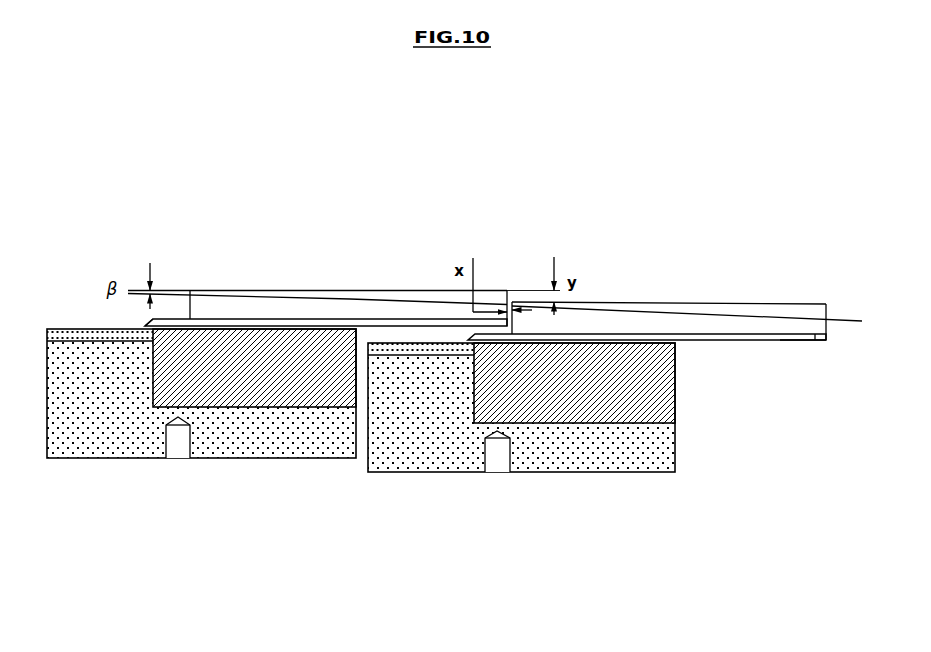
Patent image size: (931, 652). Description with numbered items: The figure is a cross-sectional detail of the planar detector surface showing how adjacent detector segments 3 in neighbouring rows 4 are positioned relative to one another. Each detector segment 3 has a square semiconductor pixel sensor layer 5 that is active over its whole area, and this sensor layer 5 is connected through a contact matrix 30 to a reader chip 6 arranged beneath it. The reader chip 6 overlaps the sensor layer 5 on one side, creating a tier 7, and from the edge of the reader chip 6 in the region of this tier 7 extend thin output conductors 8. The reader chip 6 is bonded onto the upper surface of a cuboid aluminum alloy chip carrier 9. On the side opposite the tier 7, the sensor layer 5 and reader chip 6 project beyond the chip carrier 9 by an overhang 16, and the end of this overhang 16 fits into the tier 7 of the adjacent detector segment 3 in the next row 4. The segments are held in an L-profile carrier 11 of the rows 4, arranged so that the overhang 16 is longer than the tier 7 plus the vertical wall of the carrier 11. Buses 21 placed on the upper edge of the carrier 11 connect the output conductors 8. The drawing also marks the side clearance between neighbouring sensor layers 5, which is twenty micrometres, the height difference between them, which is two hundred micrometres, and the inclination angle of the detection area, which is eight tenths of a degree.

The detector segment 3 is at (489, 275).
The row 4 is at (352, 272).
The sensor layer 5 is at (267, 291).
The reader chip 6 is at (797, 341).
The tier 7 is at (191, 305).
The output conductor 8 is at (143, 325).
The chip carrier 9 is at (297, 393).
The carrier of rows 11 is at (96, 440).
The overhang 16 is at (725, 358).
The bus 21 is at (72, 337).
The contact matrix 30 is at (815, 340).